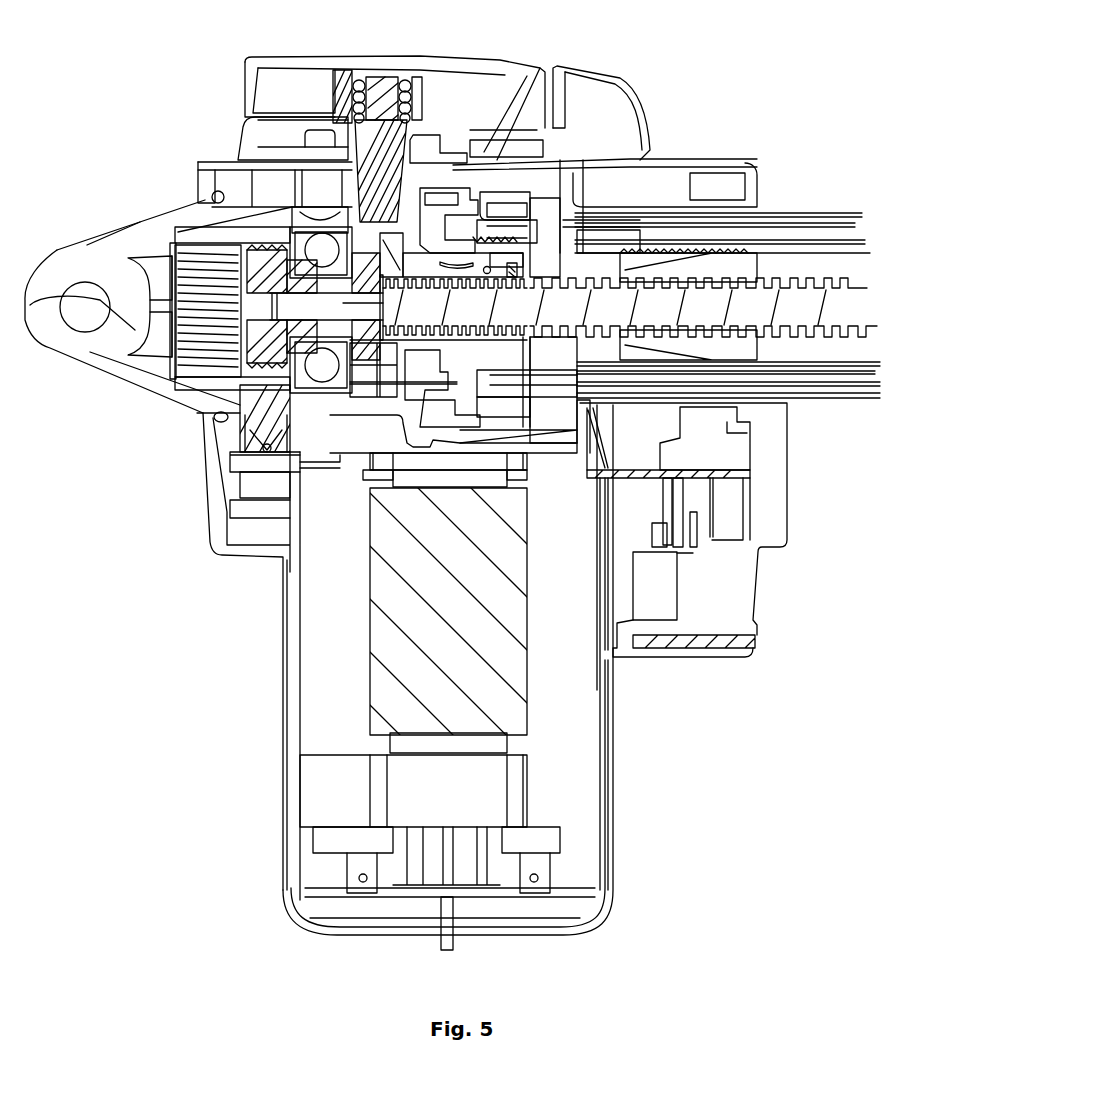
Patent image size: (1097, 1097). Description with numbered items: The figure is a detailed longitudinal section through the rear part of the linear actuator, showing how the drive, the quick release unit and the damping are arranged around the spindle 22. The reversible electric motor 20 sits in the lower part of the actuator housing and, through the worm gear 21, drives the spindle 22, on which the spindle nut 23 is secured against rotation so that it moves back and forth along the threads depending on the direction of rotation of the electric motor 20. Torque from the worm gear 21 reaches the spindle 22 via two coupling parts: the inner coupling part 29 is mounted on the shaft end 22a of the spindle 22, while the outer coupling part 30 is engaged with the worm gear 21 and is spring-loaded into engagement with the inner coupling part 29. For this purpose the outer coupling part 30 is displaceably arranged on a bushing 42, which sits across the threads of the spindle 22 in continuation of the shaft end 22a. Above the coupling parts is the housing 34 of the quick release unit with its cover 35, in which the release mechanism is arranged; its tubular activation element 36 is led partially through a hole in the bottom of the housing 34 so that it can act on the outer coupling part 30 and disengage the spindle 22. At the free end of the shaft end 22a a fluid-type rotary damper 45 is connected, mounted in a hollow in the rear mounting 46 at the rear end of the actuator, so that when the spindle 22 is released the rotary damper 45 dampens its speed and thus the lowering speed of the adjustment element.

The reversible electric motor 20 is at (380, 633).
The worm gear 21 is at (443, 208).
The spindle 22 is at (783, 293).
The shaft end 22a is at (343, 303).
The spindle nut 23 is at (668, 267).
The inner coupling part 29 is at (355, 329).
The outer coupling part 30 is at (397, 220).
The housing 34 is at (600, 77).
The cover 35 is at (497, 62).
The tubular activation element 36 is at (343, 112).
The bushing 42 is at (355, 252).
The rotary damper 45 is at (210, 263).
The rear mounting 46 is at (78, 267).